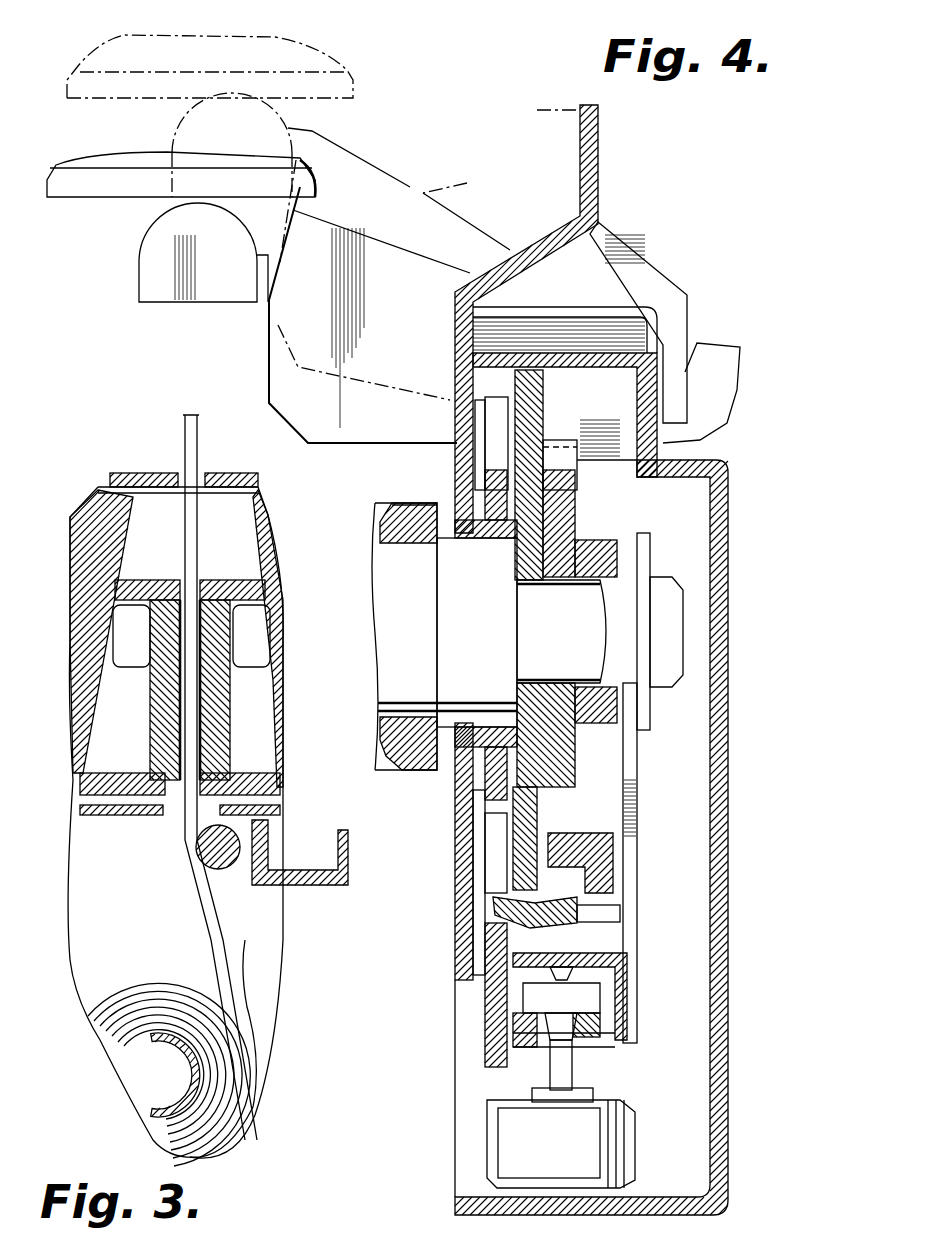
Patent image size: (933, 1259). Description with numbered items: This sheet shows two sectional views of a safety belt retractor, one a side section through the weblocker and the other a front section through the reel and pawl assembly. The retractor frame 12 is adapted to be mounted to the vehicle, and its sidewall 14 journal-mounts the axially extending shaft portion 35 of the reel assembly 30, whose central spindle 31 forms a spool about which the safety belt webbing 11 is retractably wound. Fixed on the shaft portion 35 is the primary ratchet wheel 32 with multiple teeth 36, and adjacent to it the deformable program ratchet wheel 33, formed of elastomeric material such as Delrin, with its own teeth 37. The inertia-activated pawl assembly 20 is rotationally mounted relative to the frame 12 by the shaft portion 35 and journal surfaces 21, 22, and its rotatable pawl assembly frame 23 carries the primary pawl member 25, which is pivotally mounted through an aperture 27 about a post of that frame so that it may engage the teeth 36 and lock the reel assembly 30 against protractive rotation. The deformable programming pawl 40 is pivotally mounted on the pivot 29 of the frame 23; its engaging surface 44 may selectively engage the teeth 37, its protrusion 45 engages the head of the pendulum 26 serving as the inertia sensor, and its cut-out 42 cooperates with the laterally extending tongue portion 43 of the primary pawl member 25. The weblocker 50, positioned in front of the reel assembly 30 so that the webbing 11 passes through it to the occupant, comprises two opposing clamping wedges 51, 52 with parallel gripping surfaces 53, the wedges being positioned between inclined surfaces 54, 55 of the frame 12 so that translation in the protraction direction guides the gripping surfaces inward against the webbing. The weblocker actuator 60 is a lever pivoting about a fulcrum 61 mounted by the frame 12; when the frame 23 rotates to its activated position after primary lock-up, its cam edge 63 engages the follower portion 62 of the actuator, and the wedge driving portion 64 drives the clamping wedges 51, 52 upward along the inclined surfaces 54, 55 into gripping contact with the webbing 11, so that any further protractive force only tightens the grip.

In FIG. 4, the safety belt webbing 11 is at (410, 523).
In FIG. 3, the safety belt webbing 11 is at (183, 418).
In FIG. 4, the retractor frame 12 is at (598, 142).
In FIG. 4, the sidewall 14 is at (463, 967).
In FIG. 4, the inertia-activated pawl assembly 20 is at (643, 888).
In FIG. 4, the journal surface 21 is at (590, 580).
In FIG. 4, the journal surface 22 is at (493, 542).
In FIG. 4, the pawl assembly frame 23 is at (475, 477).
In FIG. 4, the primary pawl member 25 is at (510, 913).
In FIG. 4, the pendulum 26 is at (630, 1137).
In FIG. 4, the aperture 27 is at (483, 848).
In FIG. 4, the pivot 29 is at (507, 977).
In FIG. 4, the reel assembly 30 is at (409, 636).
In FIG. 3, the reel assembly 30 is at (154, 973).
In FIG. 4, the central spindle 31 is at (444, 636).
In FIG. 3, the central spindle 31 is at (127, 1067).
In FIG. 4, the primary ratchet wheel 32 is at (530, 760).
In FIG. 4, the deformable program ratchet wheel 33 is at (560, 518).
In FIG. 4, the shaft portion 35 is at (667, 607).
In FIG. 4, the teeth 36 is at (527, 383).
In FIG. 4, the teeth 37 is at (573, 467).
In FIG. 4, the deformable programming pawl 40 is at (603, 868).
In FIG. 4, the cut-out 42 is at (610, 940).
In FIG. 4, the tongue portion 43 is at (623, 913).
In FIG. 4, the engaging surface 44 is at (623, 800).
In FIG. 4, the protrusion 45 is at (577, 977).
In FIG. 3, the weblocker 50 is at (169, 581).
In FIG. 3, the clamping wedge 51 is at (133, 808).
In FIG. 4, the clamping wedge 52 is at (110, 50).
In FIG. 3, the clamping wedge 52 is at (217, 730).
In FIG. 3, the gripping surfaces 53 is at (173, 580).
In FIG. 3, the inclined surface 54 is at (117, 633).
In FIG. 3, the inclined surface 55 is at (248, 527).
In FIG. 4, the weblocker actuator 60 is at (433, 273).
In FIG. 3, the weblocker actuator 60 is at (317, 880).
In FIG. 4, the fulcrum 61 is at (690, 377).
In FIG. 4, the follower portion 62 is at (520, 427).
In FIG. 4, the cam edge 63 is at (490, 400).
In FIG. 4, the wedge driving portion 64 is at (270, 135).
In FIG. 3, the wedge driving portion 64 is at (267, 833).